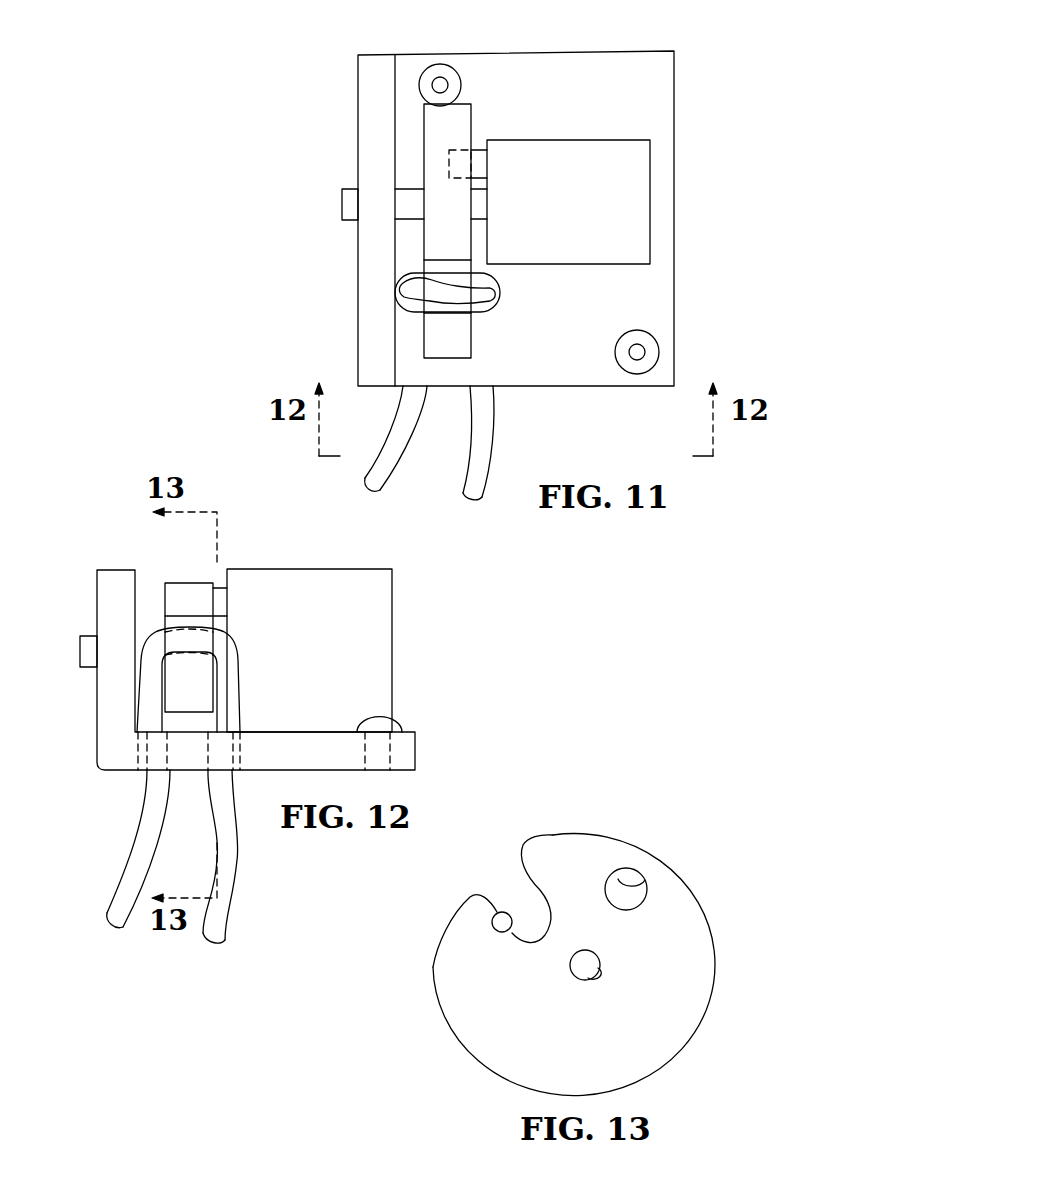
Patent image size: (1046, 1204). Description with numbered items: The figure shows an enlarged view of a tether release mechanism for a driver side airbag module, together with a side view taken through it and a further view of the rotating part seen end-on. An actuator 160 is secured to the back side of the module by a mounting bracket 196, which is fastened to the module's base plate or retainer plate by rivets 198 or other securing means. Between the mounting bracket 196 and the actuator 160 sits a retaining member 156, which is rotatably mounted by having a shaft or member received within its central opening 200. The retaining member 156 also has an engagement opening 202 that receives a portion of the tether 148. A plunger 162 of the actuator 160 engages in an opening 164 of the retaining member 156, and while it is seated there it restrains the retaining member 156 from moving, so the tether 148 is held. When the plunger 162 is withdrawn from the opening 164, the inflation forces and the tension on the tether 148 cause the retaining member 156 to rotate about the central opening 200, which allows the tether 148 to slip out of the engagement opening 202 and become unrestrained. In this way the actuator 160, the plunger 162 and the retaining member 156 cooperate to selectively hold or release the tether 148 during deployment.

In FIG. 11, the tether 148 is at (410, 289).
In FIG. 12, the tether 148 is at (135, 860).
In FIG. 11, the retaining member 156 is at (433, 142).
In FIG. 12, the retaining member 156 is at (177, 598).
In FIG. 13, the retaining member 156 is at (672, 937).
In FIG. 11, the actuator 160 is at (650, 140).
In FIG. 12, the actuator 160 is at (355, 570).
In FIG. 11, the plunger 162 is at (448, 162).
In FIG. 12, the plunger 162 is at (218, 590).
In FIG. 13, the opening 164 is at (646, 880).
In FIG. 11, the mounting bracket 196 is at (622, 51).
In FIG. 12, the mounting bracket 196 is at (410, 732).
In FIG. 11, the rivets 198 is at (425, 75).
In FIG. 12, the rivets 198 is at (378, 720).
In FIG. 13, the central opening 200 is at (598, 968).
In FIG. 13, the engagement opening 202 is at (505, 942).